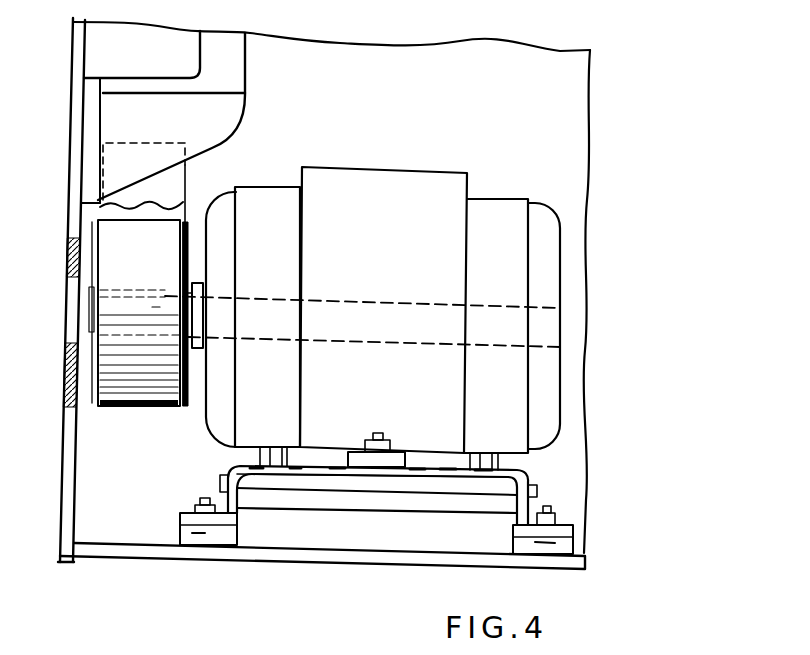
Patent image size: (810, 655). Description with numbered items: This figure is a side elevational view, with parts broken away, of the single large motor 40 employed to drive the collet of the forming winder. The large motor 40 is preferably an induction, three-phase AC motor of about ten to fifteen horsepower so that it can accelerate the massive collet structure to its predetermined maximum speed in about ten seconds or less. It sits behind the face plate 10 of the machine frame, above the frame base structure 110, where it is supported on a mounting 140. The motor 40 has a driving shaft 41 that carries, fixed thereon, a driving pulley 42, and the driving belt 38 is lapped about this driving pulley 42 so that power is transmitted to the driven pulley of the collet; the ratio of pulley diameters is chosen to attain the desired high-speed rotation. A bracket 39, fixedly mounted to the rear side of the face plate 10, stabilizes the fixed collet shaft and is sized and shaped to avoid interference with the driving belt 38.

The face plate 10 is at (57, 523).
The driving belt 38 is at (170, 208).
The bracket 39 is at (251, 92).
The large motor 40 is at (357, 162).
The driving shaft 41 is at (390, 343).
The driving pulley 42 is at (191, 397).
The frame base structure 110 is at (142, 548).
The mounting rail 140 is at (440, 505).